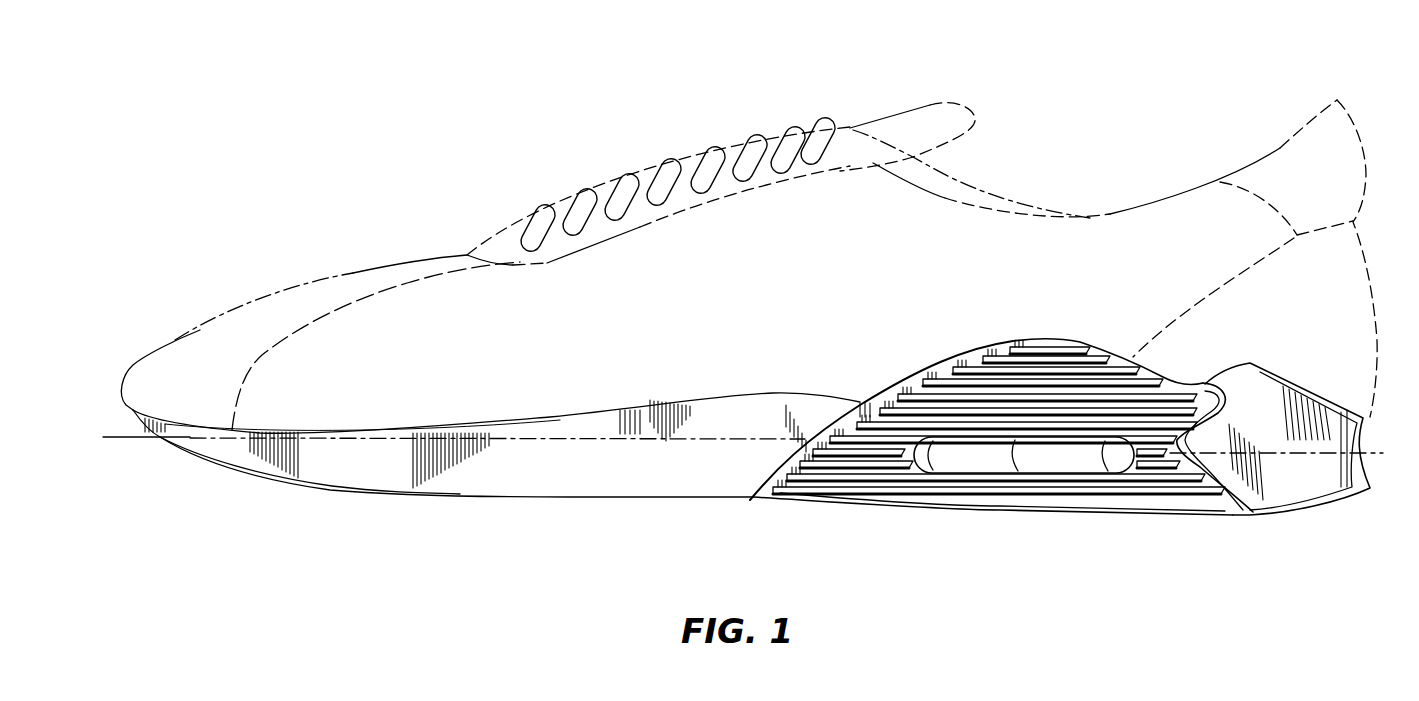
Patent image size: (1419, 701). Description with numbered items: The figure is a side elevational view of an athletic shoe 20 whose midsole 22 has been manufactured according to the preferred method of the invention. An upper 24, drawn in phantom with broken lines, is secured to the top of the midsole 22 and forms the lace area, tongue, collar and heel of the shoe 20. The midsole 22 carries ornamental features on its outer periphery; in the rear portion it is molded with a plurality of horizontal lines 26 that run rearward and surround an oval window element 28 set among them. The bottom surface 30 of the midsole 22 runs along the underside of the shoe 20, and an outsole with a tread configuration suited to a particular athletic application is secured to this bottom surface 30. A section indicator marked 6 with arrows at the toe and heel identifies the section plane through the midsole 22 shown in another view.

The athletic shoe 20 is at (686, 100).
The midsole 22 is at (1313, 489).
The upper 24 is at (420, 314).
The horizontal lines 26 is at (818, 490).
The oval window element 28 is at (1068, 470).
The bottom surface 30 is at (617, 501).
The section line 6- 6 is at (115, 437).